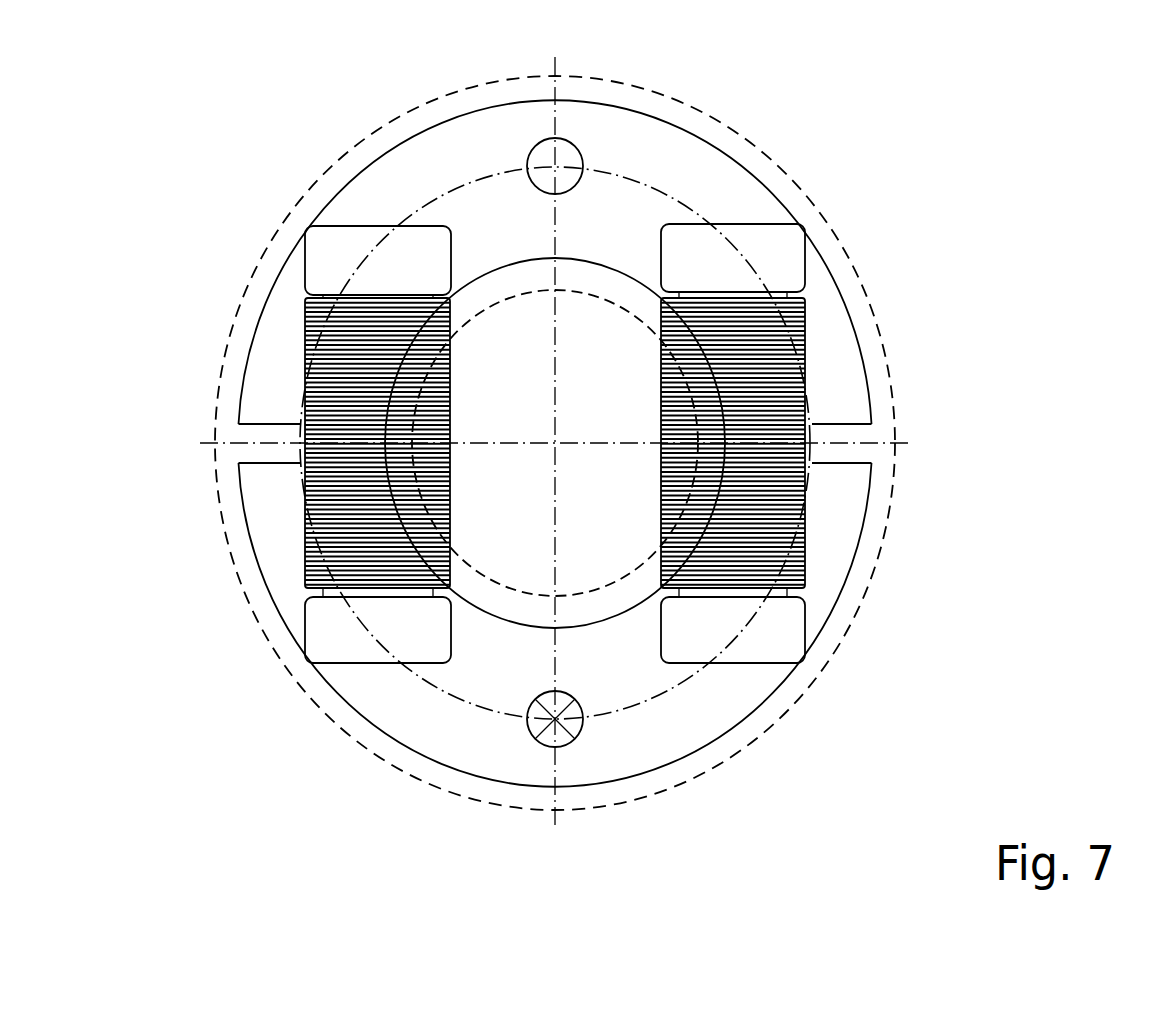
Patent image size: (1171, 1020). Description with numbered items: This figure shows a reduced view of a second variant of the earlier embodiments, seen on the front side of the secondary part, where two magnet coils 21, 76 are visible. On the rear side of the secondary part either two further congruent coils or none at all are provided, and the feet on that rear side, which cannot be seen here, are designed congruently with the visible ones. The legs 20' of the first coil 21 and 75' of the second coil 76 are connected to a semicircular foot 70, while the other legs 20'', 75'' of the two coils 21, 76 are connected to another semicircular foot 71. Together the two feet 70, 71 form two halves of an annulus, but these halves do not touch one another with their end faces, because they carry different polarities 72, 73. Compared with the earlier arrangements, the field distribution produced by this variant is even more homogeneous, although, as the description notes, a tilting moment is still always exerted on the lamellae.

The leg of the first coil 20' is at (276, 185).
The other leg of the first coil 20'' is at (275, 559).
The first magnet coil 21 is at (325, 375).
The semicircular foot 70 is at (648, 160).
The other semicircular foot 71 is at (660, 719).
The polarity 72 is at (553, 166).
The polarity 73 is at (558, 735).
The leg of the second coil 75' is at (836, 195).
The other leg of the second coil 75'' is at (841, 570).
The second magnet coil 76 is at (767, 385).